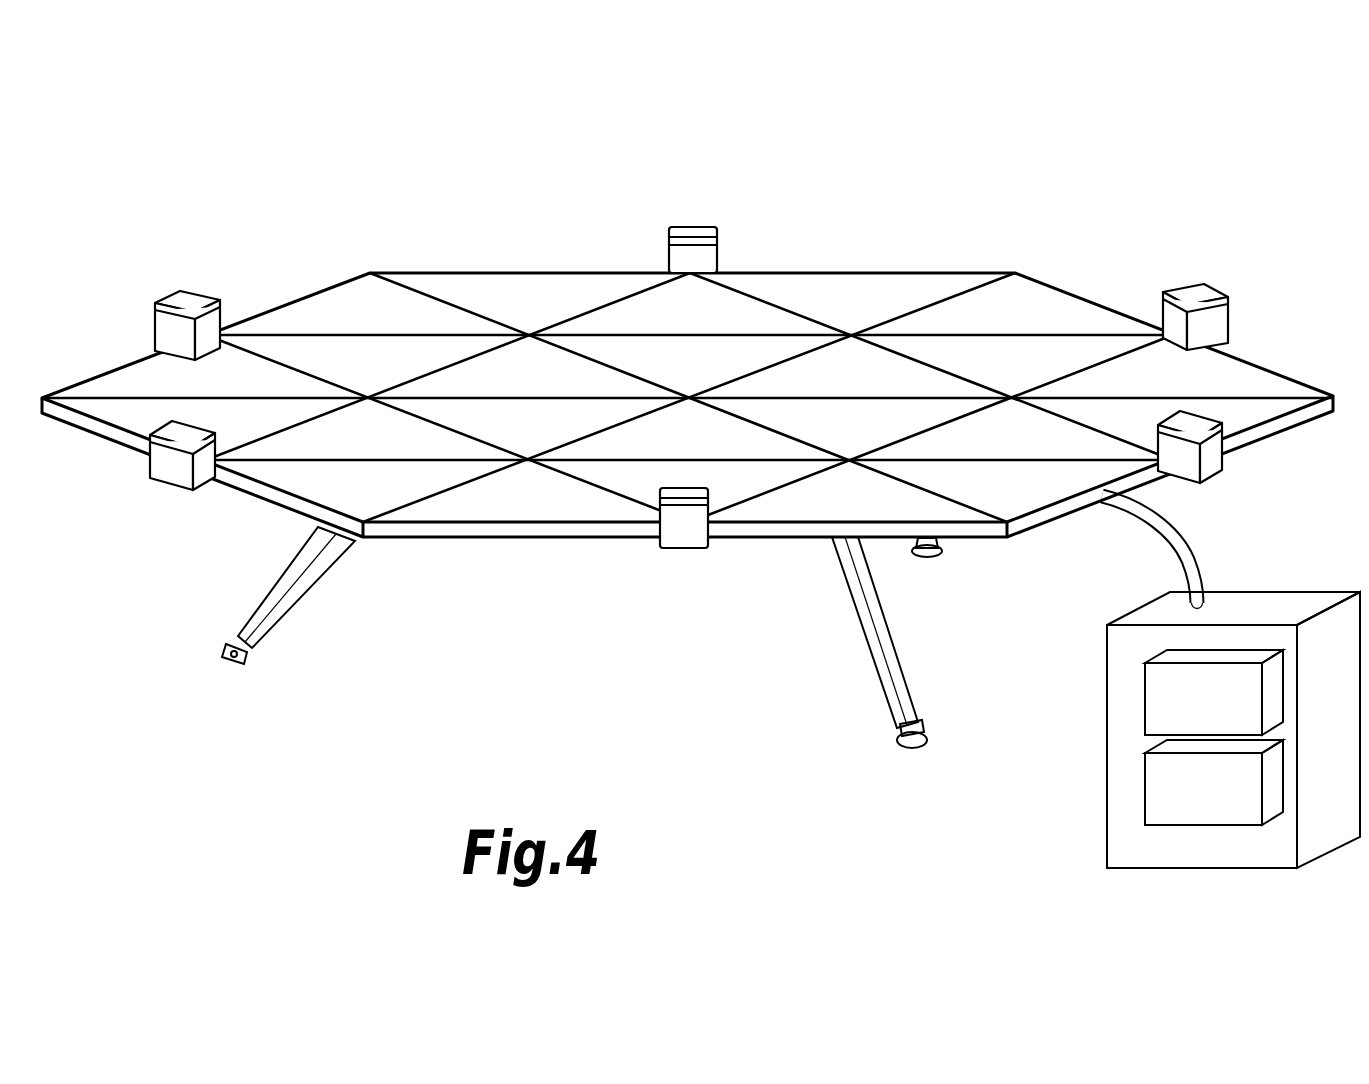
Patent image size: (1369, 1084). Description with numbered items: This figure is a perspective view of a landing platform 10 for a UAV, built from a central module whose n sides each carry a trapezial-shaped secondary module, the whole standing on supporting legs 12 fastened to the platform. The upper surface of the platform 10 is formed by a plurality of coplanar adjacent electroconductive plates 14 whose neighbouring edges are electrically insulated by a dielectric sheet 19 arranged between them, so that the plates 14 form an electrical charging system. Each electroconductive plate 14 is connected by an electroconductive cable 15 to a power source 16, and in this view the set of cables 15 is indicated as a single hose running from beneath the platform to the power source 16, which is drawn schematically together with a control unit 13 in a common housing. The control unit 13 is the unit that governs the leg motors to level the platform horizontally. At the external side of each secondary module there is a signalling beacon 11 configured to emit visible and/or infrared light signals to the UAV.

The landing platform 10 is at (378, 226).
The signalling beacon 11 is at (695, 257).
The supporting leg 12 is at (268, 623).
The control unit 13 is at (1205, 793).
The electroconductive plate 14 is at (502, 297).
The electroconductive cable 15 is at (1167, 541).
The power source 16 is at (1197, 697).
The dielectric sheet 19 is at (920, 303).